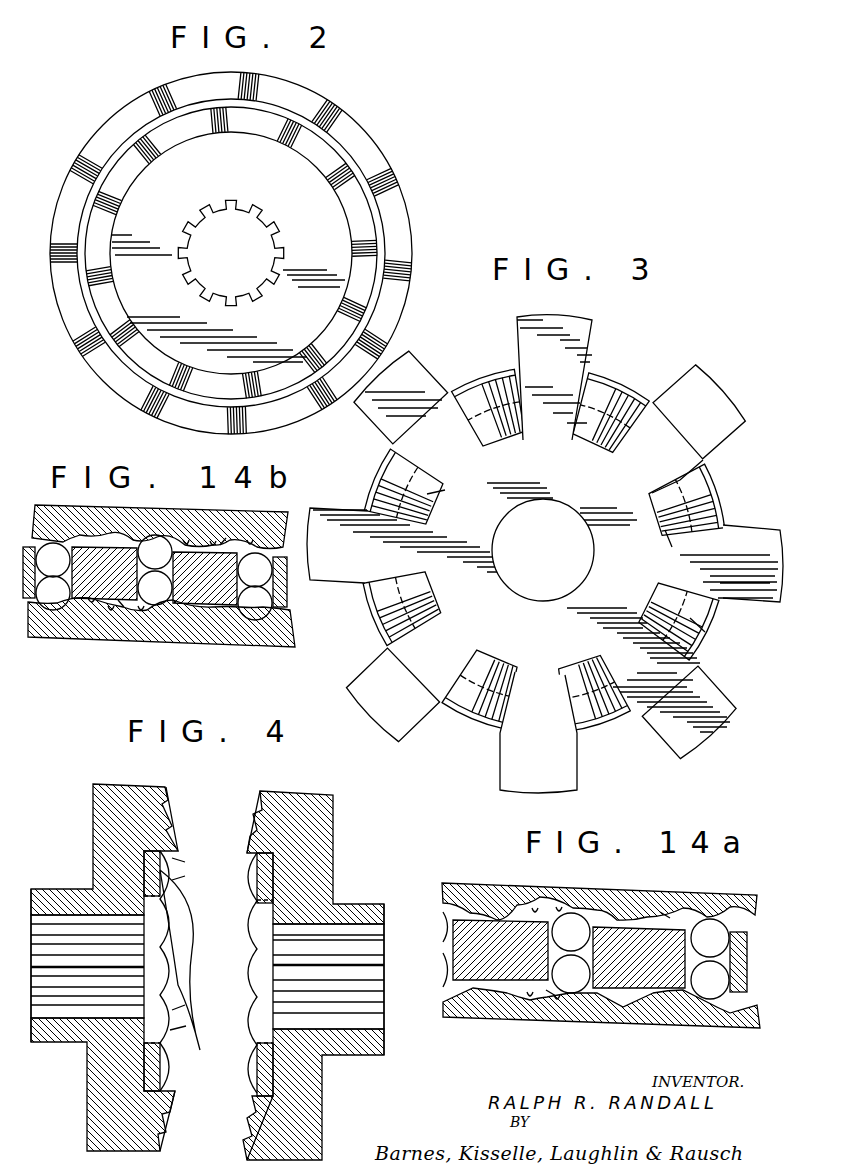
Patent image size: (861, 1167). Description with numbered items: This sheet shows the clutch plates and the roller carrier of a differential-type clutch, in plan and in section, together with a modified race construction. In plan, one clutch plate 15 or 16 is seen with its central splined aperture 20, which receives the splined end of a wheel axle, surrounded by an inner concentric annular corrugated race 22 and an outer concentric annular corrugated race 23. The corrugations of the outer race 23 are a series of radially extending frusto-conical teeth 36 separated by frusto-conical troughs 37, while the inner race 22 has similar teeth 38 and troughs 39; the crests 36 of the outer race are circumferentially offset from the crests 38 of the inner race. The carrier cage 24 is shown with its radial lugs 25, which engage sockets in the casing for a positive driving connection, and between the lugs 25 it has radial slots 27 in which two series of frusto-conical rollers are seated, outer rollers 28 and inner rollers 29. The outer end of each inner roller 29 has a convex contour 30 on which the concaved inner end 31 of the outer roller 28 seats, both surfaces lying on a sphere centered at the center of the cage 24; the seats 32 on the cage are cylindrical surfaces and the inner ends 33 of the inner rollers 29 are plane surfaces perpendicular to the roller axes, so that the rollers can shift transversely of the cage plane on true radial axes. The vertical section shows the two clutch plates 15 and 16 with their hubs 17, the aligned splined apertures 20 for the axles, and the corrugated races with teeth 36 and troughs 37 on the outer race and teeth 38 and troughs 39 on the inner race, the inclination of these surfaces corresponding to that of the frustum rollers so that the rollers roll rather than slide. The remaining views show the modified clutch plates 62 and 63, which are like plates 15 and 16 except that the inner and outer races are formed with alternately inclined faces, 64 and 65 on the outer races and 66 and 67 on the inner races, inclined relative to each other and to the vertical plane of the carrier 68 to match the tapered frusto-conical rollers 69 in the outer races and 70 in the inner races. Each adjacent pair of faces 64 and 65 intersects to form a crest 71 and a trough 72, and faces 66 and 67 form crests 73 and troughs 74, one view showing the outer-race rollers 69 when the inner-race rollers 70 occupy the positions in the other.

In FIG. 4, the clutch plate 15 is at (318, 882).
In FIG. 4, the clutch plate 16 is at (100, 868).
In FIG. 4, the hub 17 is at (372, 920).
In FIG. 2, the splined aperture 20 is at (190, 278).
In FIG. 4, the splined aperture 20 is at (42, 968).
In FIG. 2, the inner race 22 is at (345, 193).
In FIG. 2, the outer race 23 is at (373, 157).
In FIG. 3, the carrier cage 24 is at (598, 483).
In FIG. 3, the radial lug 25 is at (715, 410).
In FIG. 3, the radial slot 27 is at (584, 392).
In FIG. 3, the outer roller 28 is at (386, 478).
In FIG. 3, the inner roller 29 is at (428, 496).
In FIG. 3, the convex contour 30 is at (701, 622).
In FIG. 3, the concaved end 31 is at (482, 412).
In FIG. 3, the seat 32 is at (649, 498).
In FIG. 3, the inner end 33 is at (665, 594).
In FIG. 2, the tooth 36 is at (78, 165).
In FIG. 4, the tooth 36 is at (258, 795).
In FIG. 2, the trough 37 is at (397, 227).
In FIG. 2, the tooth 38 is at (117, 192).
In FIG. 4, the tooth 38 is at (172, 1095).
In FIG. 2, the trough 39 is at (247, 122).
In FIG. 4, the trough 39 is at (172, 835).
In FIG. 14B, the clutch plate 62 is at (272, 525).
In FIG. 14A, the clutch plate 62 is at (700, 900).
In FIG. 14B, the clutch plate 63 is at (278, 625).
In FIG. 14A, the clutch plate 63 is at (624, 1010).
In FIG. 14A, the inclined face 64 is at (535, 907).
In FIG. 14A, the inclined face 65 is at (560, 906).
In FIG. 14B, the inclined face 66 is at (213, 545).
In FIG. 14B, the inclined face 67 is at (250, 545).
In FIG. 14B, the carrier 68 is at (212, 590).
In FIG. 14A, the carrier 68 is at (630, 935).
In FIG. 14B, the frusto-conical roller 69 is at (50, 553).
In FIG. 14A, the frusto-conical roller 70 is at (582, 942).
In FIG. 14A, the crest 71 is at (500, 985).
In FIG. 14A, the trough 72 is at (662, 914).
In FIG. 14B, the crest 73 is at (185, 545).
In FIG. 14B, the trough 74 is at (222, 545).